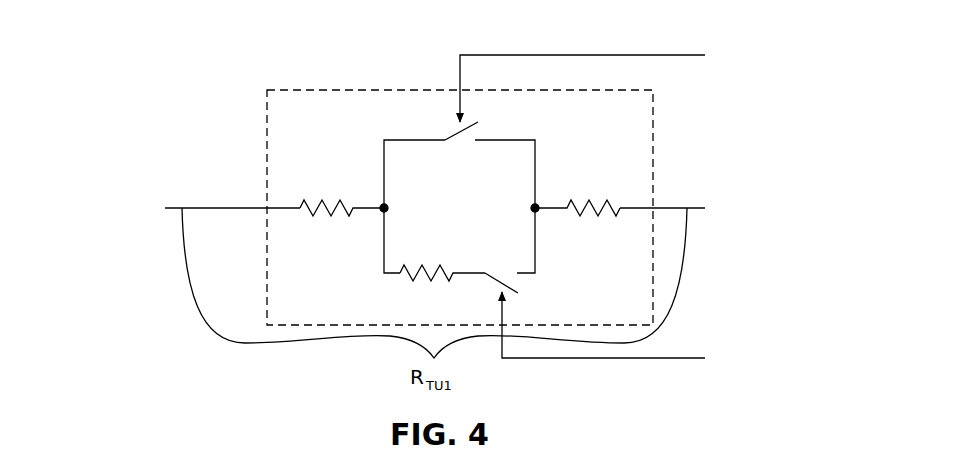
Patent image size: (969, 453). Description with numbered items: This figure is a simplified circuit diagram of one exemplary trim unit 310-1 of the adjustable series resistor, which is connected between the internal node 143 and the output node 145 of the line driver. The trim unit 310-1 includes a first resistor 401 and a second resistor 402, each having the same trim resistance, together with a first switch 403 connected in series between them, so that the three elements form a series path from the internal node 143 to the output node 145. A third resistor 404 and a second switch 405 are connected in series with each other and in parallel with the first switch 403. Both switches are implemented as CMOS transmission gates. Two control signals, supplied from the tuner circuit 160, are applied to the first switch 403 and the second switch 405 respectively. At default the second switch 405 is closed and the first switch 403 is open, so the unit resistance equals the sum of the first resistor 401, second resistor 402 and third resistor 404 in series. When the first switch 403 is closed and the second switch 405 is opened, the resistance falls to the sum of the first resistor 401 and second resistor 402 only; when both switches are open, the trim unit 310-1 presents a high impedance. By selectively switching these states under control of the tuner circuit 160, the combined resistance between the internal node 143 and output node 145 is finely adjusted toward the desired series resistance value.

The trim unit 310-1 is at (300, 88).
The first resistor 401 is at (323, 219).
The second resistor 402 is at (570, 222).
The first switch 403 is at (442, 125).
The third resistor 404 is at (403, 283).
The second switch 405 is at (530, 283).
The internal node 143 is at (176, 207).
The output node 145 is at (712, 207).
The tuner circuit 160 is at (634, 208).